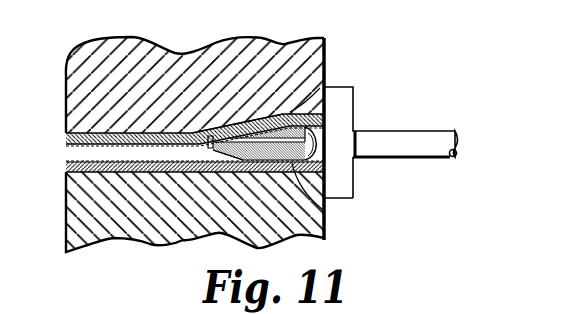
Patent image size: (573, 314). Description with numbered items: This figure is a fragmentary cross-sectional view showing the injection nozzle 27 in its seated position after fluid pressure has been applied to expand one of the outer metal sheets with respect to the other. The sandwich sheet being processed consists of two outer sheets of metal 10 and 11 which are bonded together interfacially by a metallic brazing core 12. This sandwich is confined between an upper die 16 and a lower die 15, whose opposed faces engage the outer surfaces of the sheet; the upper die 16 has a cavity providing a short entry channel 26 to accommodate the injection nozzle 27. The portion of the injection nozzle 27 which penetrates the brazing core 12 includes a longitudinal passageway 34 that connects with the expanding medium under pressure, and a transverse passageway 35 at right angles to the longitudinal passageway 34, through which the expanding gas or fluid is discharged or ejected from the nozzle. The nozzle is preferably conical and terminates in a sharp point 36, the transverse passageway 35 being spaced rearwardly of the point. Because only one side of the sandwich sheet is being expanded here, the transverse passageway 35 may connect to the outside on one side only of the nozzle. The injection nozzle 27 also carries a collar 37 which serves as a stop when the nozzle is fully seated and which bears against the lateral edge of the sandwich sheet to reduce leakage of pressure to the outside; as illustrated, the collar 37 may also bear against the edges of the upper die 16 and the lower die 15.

The upper die 16 is at (133, 38).
The outer sheet of metal 10 is at (80, 133).
The metallic brazing core 12 is at (70, 152).
The outer sheet of metal 11 is at (70, 171).
The lower die 15 is at (88, 213).
The sharp point 36 is at (188, 137).
The transverse passageway 35 is at (212, 152).
The longitudinal passageway 34 is at (300, 137).
The entry channel 26 is at (328, 78).
The injection nozzle 27 is at (328, 203).
The collar 37 is at (343, 102).